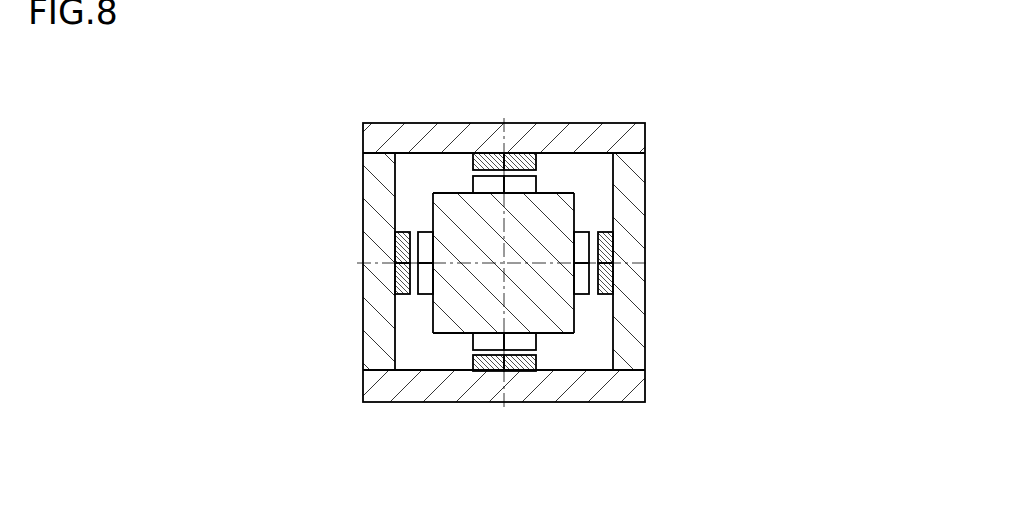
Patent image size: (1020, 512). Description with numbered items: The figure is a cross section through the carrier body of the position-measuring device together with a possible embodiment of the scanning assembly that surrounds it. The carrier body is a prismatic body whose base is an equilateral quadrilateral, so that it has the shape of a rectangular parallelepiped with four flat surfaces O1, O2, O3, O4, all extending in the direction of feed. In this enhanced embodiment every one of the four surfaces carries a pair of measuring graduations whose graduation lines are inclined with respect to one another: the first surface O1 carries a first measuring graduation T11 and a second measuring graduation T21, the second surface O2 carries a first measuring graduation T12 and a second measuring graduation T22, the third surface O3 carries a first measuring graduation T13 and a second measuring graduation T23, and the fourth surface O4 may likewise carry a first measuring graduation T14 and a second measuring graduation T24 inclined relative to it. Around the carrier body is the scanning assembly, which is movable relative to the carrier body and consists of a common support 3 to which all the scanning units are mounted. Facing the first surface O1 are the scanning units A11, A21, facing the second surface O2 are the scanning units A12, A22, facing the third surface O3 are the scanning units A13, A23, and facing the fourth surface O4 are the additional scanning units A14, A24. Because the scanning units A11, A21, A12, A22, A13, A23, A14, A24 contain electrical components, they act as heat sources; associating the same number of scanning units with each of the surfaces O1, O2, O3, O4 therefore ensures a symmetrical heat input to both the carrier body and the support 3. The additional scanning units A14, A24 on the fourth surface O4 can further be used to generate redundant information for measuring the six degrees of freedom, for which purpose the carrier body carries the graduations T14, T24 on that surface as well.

The common support 3 is at (628, 385).
The first surface O1 is at (562, 192).
The second surface O2 is at (575, 320).
The third surface O3 is at (433, 310).
The fourth surface O4 is at (452, 335).
The first measuring graduation T11 is at (482, 188).
The second measuring graduation T21 is at (526, 190).
The scanning unit A11 is at (487, 163).
The scanning unit A21 is at (518, 163).
The first measuring graduation T12 is at (582, 243).
The second measuring graduation T22 is at (580, 285).
The scanning unit A12 is at (608, 247).
The scanning unit A22 is at (608, 282).
The first measuring graduation T13 is at (428, 237).
The second measuring graduation T23 is at (430, 273).
The scanning unit A13 is at (404, 240).
The scanning unit A23 is at (407, 277).
The first measuring graduation T14 is at (528, 338).
The second measuring graduation T24 is at (483, 337).
The scanning unit A14 is at (520, 362).
The scanning unit A24 is at (486, 367).